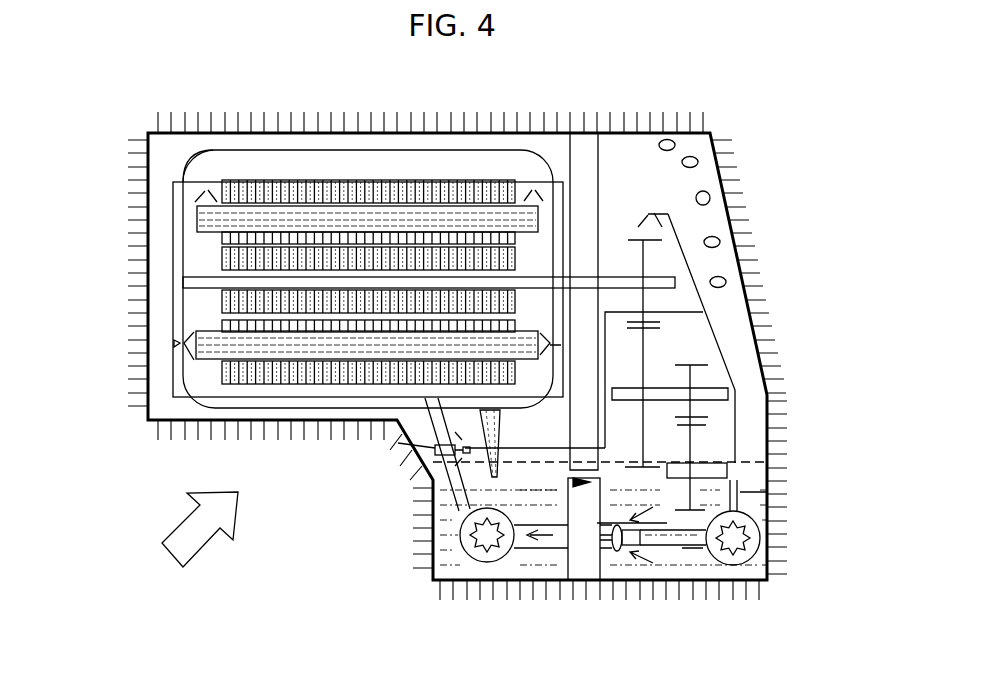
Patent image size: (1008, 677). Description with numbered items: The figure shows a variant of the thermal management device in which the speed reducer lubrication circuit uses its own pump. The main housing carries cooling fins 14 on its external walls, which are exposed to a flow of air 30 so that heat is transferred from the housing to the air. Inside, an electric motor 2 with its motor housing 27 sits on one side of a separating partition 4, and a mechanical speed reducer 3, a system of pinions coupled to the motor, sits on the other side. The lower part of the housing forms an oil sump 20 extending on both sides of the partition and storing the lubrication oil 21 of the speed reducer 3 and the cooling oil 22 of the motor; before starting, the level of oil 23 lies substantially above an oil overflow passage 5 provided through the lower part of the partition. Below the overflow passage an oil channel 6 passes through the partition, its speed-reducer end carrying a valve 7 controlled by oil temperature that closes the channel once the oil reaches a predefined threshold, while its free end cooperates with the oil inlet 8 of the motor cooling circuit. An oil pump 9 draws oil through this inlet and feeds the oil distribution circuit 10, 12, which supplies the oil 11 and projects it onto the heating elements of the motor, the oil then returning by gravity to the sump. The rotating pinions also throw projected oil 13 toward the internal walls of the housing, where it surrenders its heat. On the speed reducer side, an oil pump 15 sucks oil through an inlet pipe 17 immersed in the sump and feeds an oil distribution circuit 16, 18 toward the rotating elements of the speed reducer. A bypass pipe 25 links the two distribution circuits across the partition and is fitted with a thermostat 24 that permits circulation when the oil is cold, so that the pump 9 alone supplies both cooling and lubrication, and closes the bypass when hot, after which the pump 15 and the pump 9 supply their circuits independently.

The electric motor 2 is at (274, 160).
The mechanical speed reducer 3 is at (643, 252).
The separating partition 4 is at (600, 165).
The oil overflow passage 5 is at (605, 472).
The oil channel 6 is at (619, 553).
The valve 7 is at (660, 523).
The oil inlet 8 is at (514, 565).
The oil pump 9 is at (433, 547).
The oil distribution circuit 10 is at (425, 468).
The oil 11 is at (540, 178).
The oil distribution circuit 12 is at (173, 223).
The projected oil 13 is at (698, 161).
The cooling fins 14 is at (765, 350).
The oil pump 15 is at (767, 548).
The oil distribution circuit 16 is at (740, 492).
The inlet pipe 17 is at (691, 549).
The oil distribution circuit 18 is at (694, 275).
The oil sump 20 is at (558, 580).
The lubrication oil 21 is at (760, 570).
The cooling oil 22 is at (433, 517).
The level of oil 23 is at (727, 463).
The thermostat 24 is at (398, 437).
The bypass pipe 25 is at (607, 324).
The motor housing 27 is at (186, 182).
The flow of air 30 is at (200, 529).